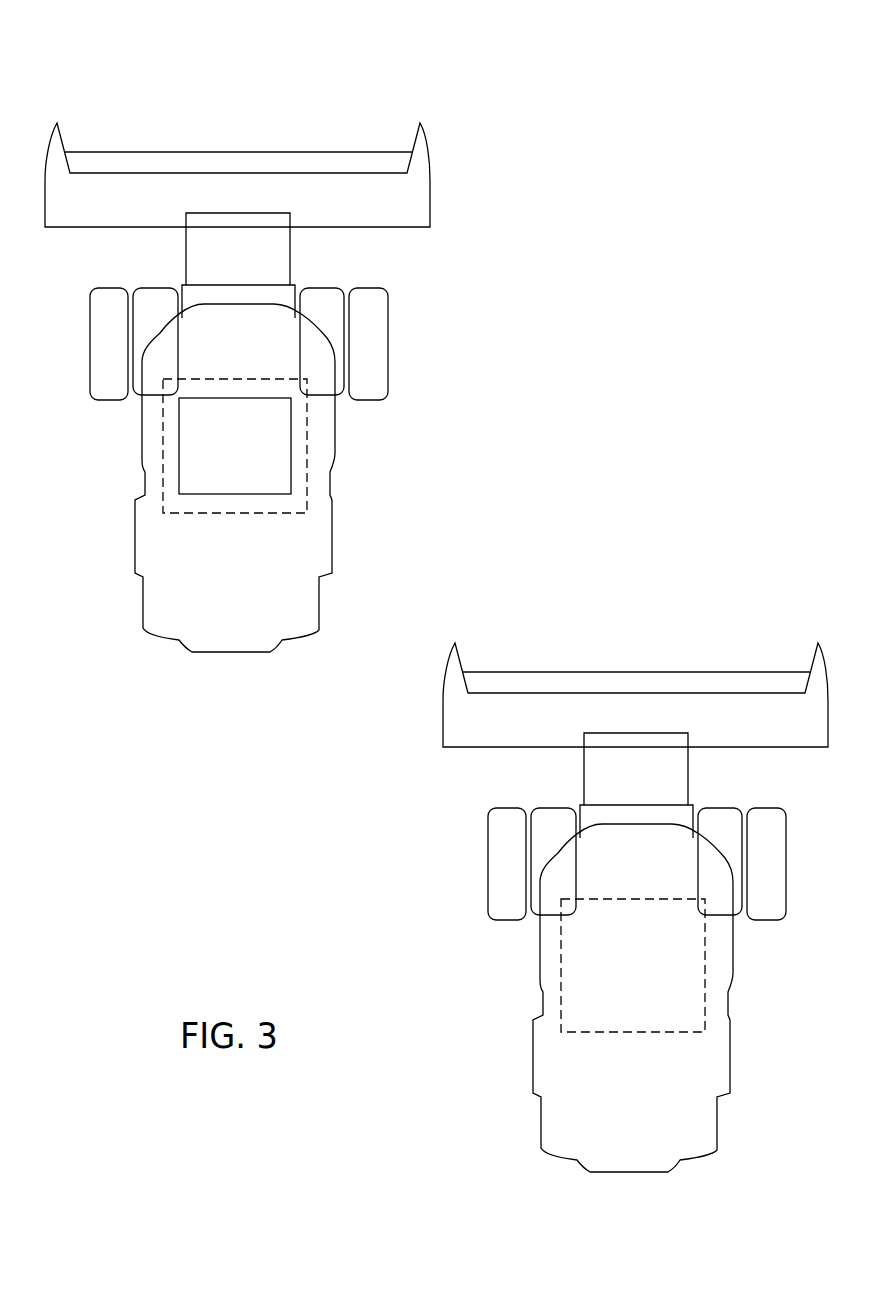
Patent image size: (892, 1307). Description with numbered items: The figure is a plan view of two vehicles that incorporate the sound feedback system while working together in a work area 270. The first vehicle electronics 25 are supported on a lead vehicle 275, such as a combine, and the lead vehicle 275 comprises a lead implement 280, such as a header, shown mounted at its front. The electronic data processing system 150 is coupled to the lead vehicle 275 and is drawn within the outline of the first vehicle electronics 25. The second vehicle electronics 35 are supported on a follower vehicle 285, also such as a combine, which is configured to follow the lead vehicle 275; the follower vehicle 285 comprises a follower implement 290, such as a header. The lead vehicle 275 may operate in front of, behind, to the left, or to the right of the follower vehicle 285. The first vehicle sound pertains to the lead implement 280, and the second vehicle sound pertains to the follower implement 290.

The work area 270 is at (689, 207).
The lead vehicle 275 is at (148, 88).
The lead implement 280 is at (307, 152).
The follower vehicle 285 is at (547, 609).
The follower implement 290 is at (705, 672).
The first vehicle electronics 25 is at (307, 415).
The second vehicle electronics 35 is at (705, 935).
The electronic data processing system 150 is at (291, 457).